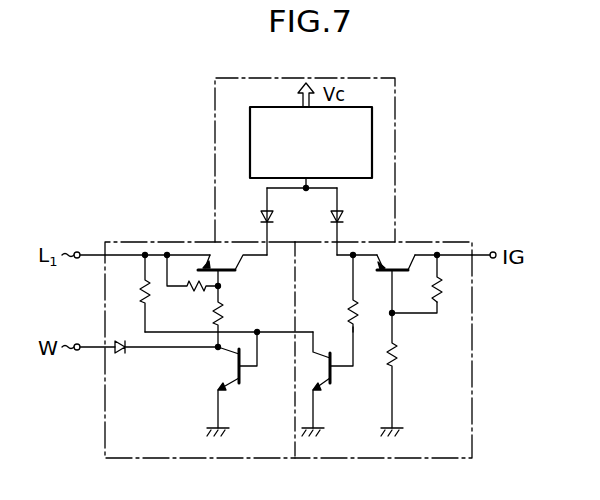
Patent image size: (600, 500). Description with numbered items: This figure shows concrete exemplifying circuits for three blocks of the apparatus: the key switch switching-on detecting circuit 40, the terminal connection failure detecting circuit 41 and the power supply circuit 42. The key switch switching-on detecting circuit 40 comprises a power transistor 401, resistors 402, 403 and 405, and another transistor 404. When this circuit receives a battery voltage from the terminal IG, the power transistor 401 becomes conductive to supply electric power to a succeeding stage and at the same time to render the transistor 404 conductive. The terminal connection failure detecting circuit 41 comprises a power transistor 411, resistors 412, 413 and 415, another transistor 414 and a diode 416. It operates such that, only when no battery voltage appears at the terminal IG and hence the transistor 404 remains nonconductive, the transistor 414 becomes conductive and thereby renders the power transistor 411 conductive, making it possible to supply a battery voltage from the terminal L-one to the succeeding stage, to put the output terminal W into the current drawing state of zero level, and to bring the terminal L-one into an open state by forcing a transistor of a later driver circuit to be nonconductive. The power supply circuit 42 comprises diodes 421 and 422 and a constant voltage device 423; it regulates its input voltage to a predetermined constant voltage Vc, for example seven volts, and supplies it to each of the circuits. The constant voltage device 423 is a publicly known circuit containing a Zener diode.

The key switch switching-on detecting circuit 40 is at (473, 400).
The terminal connection failure detecting circuit 41 is at (105, 403).
The power supply circuit 42 is at (364, 57).
The power transistor 401 is at (395, 261).
The resistor 402 is at (445, 284).
The resistor 403 is at (399, 359).
The transistor 404 is at (333, 372).
The resistor 405 is at (347, 313).
The power transistor 411 is at (212, 260).
The resistor 412 is at (200, 294).
The resistor 413 is at (222, 312).
The transistor 414 is at (232, 366).
The resistor 415 is at (147, 295).
The diode 416 is at (125, 357).
The diode 421 is at (341, 218).
The diode 422 is at (263, 216).
The constant voltage device 423 is at (250, 133).